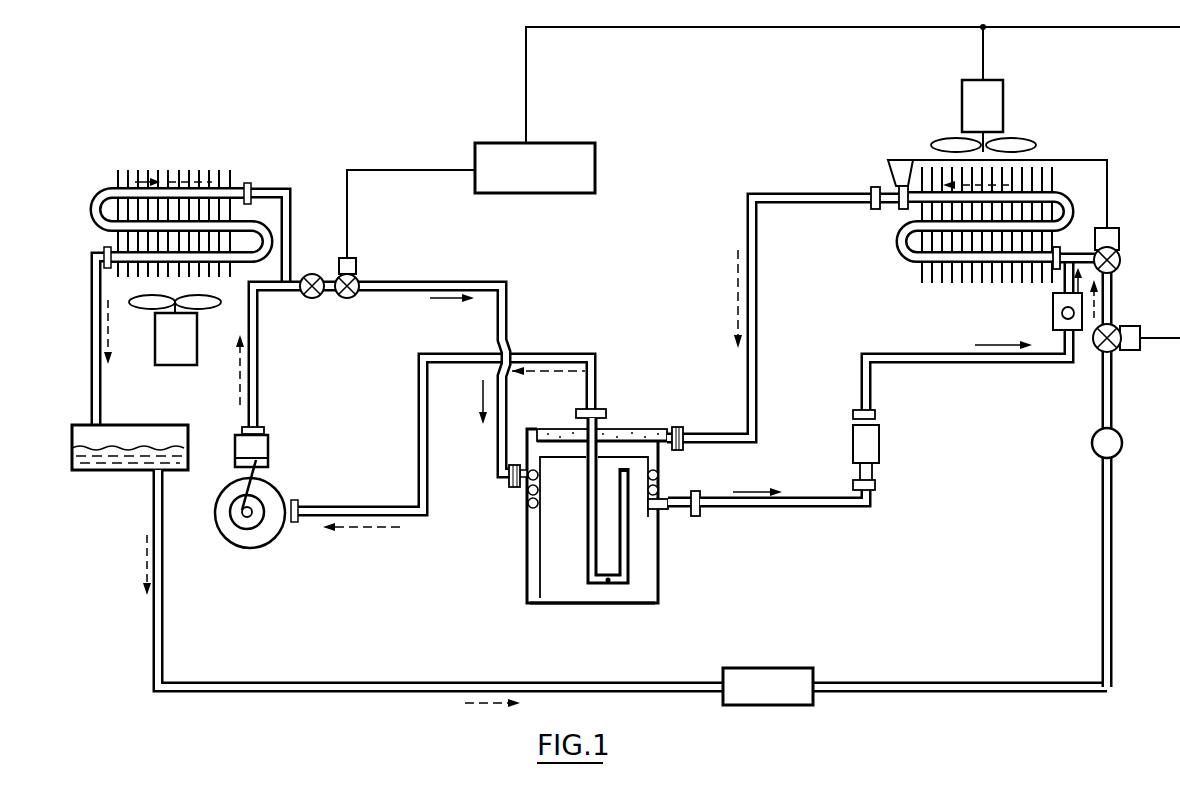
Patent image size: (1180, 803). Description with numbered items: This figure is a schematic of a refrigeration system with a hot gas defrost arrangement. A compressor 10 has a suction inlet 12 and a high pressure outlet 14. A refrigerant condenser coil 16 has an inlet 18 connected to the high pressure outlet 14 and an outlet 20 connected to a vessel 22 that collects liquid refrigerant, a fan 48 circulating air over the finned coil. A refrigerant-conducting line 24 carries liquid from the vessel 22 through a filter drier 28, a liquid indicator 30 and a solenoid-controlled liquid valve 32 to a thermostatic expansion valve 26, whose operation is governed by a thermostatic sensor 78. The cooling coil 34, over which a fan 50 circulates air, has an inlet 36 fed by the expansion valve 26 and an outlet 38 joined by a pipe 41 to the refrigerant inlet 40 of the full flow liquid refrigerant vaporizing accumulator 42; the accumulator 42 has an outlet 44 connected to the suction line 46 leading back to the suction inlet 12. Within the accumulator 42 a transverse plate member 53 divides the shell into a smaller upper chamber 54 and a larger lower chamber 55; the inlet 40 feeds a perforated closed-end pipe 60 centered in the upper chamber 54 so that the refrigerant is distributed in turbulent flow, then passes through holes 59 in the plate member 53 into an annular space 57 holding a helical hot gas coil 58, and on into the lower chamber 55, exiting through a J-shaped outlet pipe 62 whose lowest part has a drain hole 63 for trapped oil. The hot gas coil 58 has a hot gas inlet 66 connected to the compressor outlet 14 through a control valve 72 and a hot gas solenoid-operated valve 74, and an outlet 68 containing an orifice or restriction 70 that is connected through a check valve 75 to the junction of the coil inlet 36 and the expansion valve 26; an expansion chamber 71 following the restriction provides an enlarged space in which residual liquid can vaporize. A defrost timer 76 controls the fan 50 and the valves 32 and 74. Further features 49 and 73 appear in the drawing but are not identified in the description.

The compressor 10 is at (232, 536).
The suction inlet 12 is at (296, 522).
The high pressure outlet 14 is at (259, 418).
The refrigerant condenser coil 16 is at (252, 161).
The inlet 18 is at (252, 192).
The outlet 20 is at (104, 255).
The vessel 22 is at (125, 437).
The refrigerant-conducting line 24 is at (418, 682).
The thermostatic expansion valve 26 is at (1120, 266).
The filter drier 28 is at (813, 672).
The liquid indicator 30 is at (1093, 438).
The solenoid-controlled liquid valve 32 is at (1118, 335).
The cooling coil 34 is at (940, 286).
The inlet 36 is at (1060, 250).
The outlet 38 is at (906, 182).
The refrigerant inlet 40 is at (683, 430).
The pipe 41 is at (758, 300).
The full flow liquid refrigerant vaporizing accumulator 42 is at (676, 588).
The outlet 44 is at (598, 424).
The suction line 46 is at (598, 362).
The fan 48 is at (176, 365).
The inner wall 49 is at (536, 507).
The fan 50 is at (1003, 105).
The transverse plate member 53 is at (541, 459).
The upper chamber 54 is at (640, 429).
The lower chamber 55 is at (570, 604).
The annular space 57 is at (528, 536).
The hot gas coil 58 is at (529, 494).
The holes 59 is at (532, 466).
The perforated closed-end pipe 60 is at (576, 412).
The J-shaped accumulator outlet pipe 62 is at (587, 560).
The drain hole 63 is at (608, 584).
The hot gas inlet 66 is at (508, 481).
The outlet 68 is at (697, 518).
The orifice or restriction 70 is at (668, 498).
The expansion chamber 71 is at (880, 440).
The control valve 72 is at (312, 274).
The outlet line 73 is at (780, 509).
The hot gas solenoid-operated valve 74 is at (357, 265).
The check valve 75 is at (1053, 313).
The defrost timer 76 is at (596, 156).
The thermostatic sensor 78 is at (874, 187).